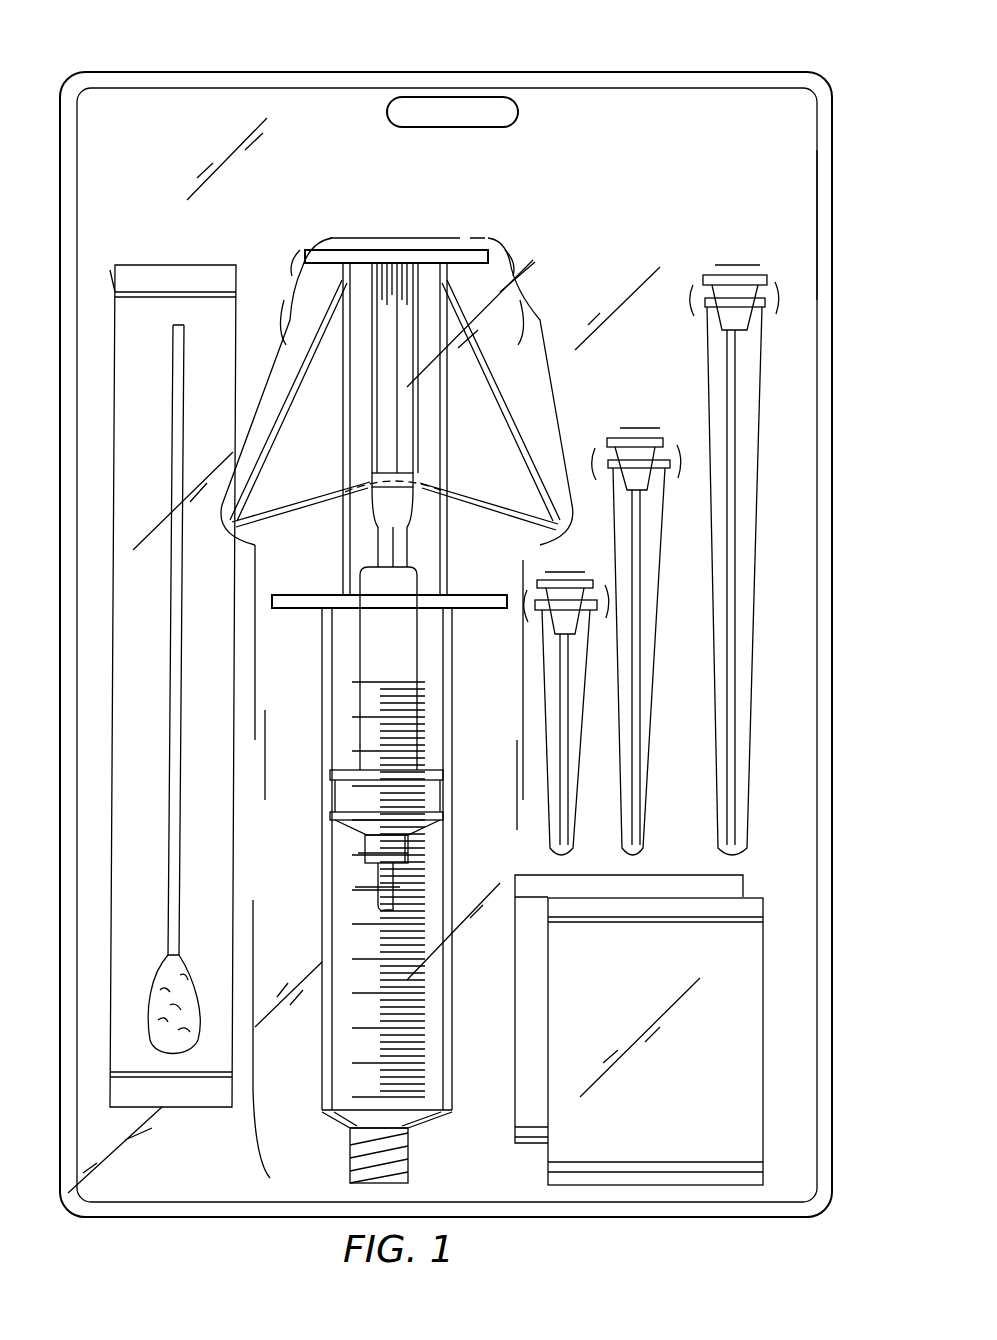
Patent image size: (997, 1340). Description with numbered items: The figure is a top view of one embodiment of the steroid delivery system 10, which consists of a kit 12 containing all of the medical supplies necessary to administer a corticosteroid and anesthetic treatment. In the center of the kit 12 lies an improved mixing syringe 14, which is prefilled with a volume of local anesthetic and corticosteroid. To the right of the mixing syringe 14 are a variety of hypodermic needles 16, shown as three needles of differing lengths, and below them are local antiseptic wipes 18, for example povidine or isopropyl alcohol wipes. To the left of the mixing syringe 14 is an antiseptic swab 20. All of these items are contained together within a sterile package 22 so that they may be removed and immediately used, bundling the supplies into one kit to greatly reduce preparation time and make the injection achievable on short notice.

The steroid delivery system 10 is at (688, 48).
The kit 12 is at (130, 155).
The mixing syringe 14 is at (480, 226).
The hypodermic needles 16 is at (664, 320).
The local antiseptic wipes 18 is at (788, 1138).
The antiseptic swab 20 is at (92, 436).
The sterile package 22 is at (825, 228).